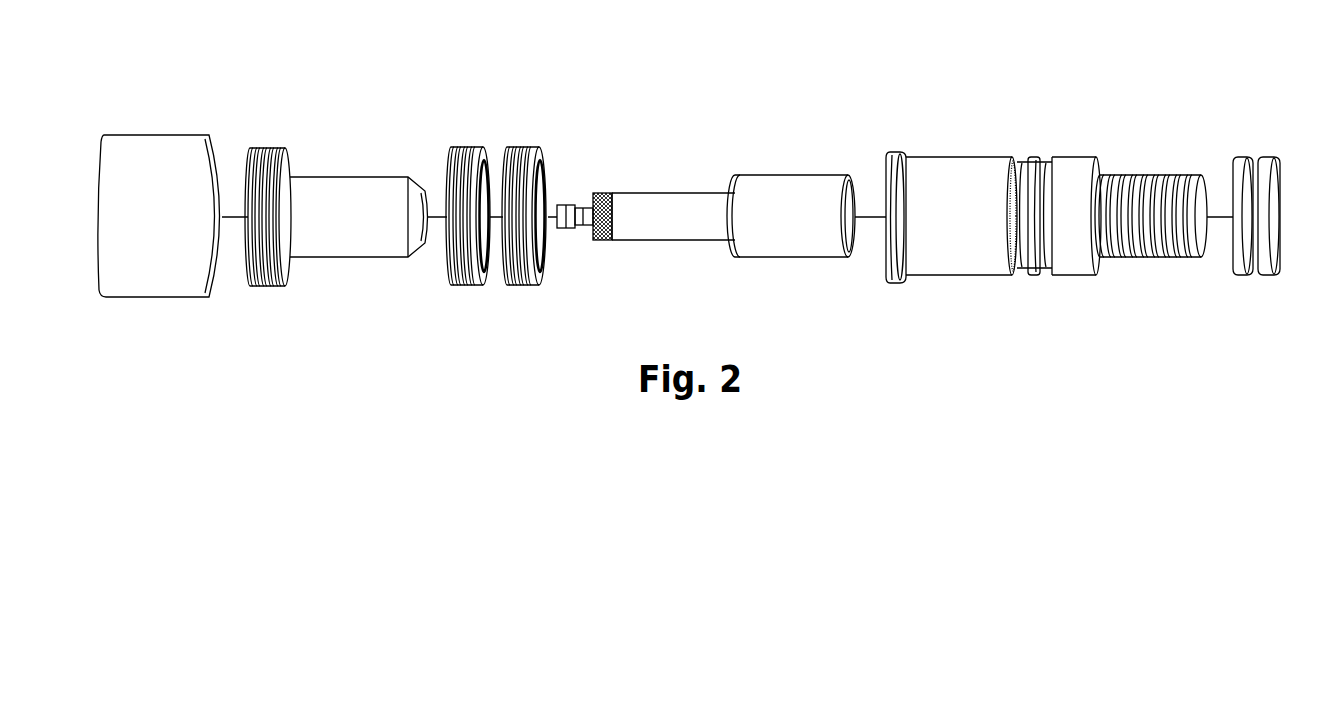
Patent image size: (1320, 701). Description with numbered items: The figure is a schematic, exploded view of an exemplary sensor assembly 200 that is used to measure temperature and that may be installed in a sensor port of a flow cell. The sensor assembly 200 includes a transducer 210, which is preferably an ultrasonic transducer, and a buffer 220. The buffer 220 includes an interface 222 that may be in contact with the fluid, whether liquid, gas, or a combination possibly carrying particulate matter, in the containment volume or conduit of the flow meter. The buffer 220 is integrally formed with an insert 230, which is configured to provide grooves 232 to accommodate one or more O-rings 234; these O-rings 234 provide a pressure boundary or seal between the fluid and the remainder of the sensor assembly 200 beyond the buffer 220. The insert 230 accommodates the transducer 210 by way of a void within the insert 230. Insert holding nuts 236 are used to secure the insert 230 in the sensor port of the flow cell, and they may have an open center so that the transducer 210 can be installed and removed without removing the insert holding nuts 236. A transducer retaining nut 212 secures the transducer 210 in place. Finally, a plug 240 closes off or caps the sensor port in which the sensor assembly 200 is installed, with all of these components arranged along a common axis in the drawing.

The sensor assembly 200 is at (1293, 110).
The transducer 210 is at (785, 218).
The transducer retaining nut 212 is at (271, 285).
The buffer 220 is at (1147, 240).
The interface 222 is at (1217, 238).
The insert 230 is at (957, 247).
The grooves 232 is at (1038, 284).
The O-rings 234 is at (1290, 269).
The insert holding nuts 236 is at (500, 289).
The plug 240 is at (143, 282).